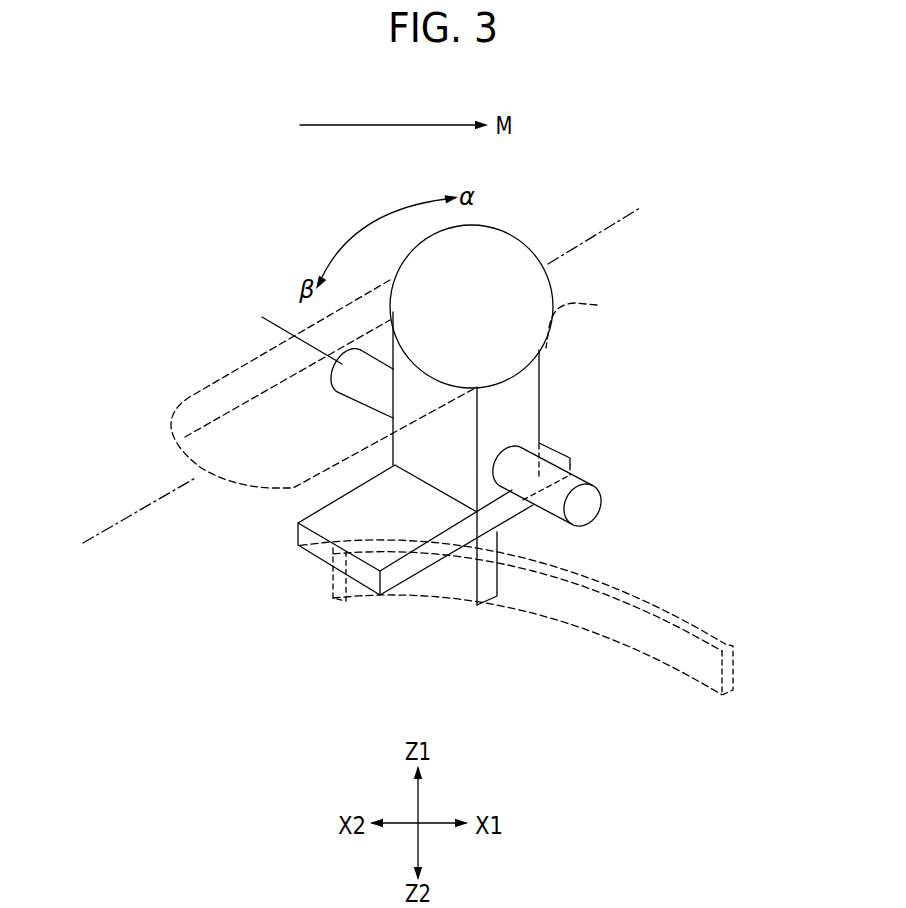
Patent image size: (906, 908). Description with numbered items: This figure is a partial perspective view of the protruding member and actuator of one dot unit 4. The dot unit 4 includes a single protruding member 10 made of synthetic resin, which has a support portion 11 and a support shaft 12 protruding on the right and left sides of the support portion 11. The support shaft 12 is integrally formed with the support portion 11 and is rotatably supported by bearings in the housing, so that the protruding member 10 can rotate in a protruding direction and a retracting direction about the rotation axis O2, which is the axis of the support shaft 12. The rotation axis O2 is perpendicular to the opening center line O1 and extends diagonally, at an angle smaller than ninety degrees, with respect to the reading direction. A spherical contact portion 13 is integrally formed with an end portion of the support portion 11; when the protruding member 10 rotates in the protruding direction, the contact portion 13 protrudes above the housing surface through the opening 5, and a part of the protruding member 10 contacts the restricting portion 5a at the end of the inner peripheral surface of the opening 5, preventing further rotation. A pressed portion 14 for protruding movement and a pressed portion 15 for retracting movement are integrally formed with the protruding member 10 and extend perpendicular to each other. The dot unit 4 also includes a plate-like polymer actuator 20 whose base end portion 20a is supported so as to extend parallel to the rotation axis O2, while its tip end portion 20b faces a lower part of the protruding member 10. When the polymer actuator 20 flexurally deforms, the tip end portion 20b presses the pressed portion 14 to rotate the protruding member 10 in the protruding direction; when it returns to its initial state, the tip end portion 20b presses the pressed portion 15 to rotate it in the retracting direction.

The dot unit 4 is at (622, 263).
The opening 5 is at (188, 397).
The restricting portion 5a is at (597, 305).
The protruding member 10 is at (562, 383).
The support portion 11 is at (527, 419).
The support shaft 12 is at (600, 491).
The contact portion 13 is at (508, 253).
The pressed portion for protruding movement 14 is at (315, 543).
The pressed portion for retracting movement 15 is at (486, 590).
The polymer actuator 20 is at (603, 623).
The base end portion 20a is at (707, 673).
The tip end portion 20b is at (354, 600).
The opening center line O1 is at (640, 207).
The rotation axis O2 is at (278, 324).